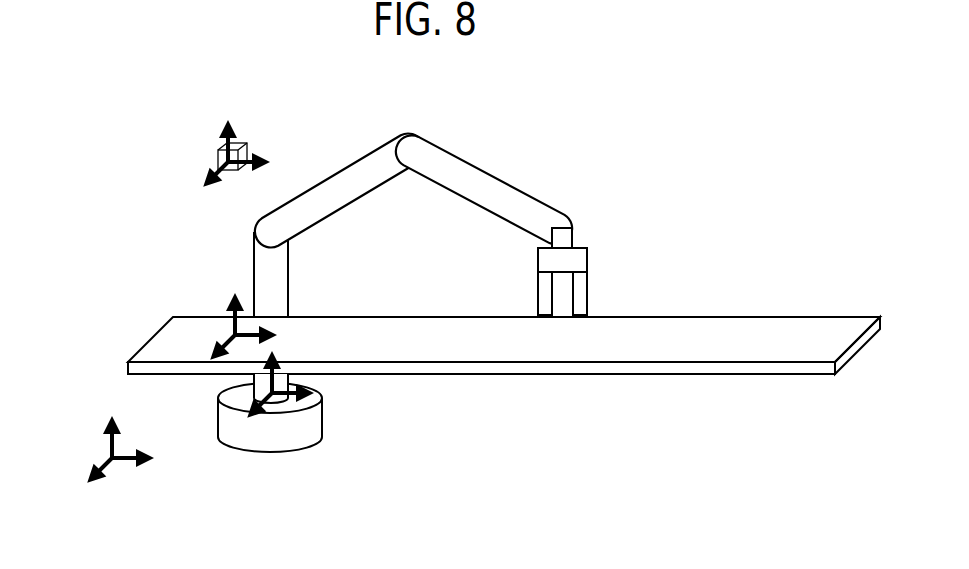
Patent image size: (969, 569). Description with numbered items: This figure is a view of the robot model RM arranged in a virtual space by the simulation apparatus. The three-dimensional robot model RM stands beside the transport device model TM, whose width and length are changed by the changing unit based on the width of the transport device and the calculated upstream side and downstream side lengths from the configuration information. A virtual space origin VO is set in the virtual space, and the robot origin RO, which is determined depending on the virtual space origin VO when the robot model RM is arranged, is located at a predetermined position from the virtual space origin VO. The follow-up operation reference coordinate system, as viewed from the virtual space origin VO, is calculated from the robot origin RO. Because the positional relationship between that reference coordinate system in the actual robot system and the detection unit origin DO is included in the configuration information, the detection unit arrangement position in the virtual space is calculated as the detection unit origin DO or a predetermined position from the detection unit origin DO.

The detection unit origin DO is at (218, 160).
The robot model RM is at (526, 155).
The transport device model TM is at (778, 326).
The virtual space origin VO is at (112, 458).
The robot origin RO is at (273, 395).